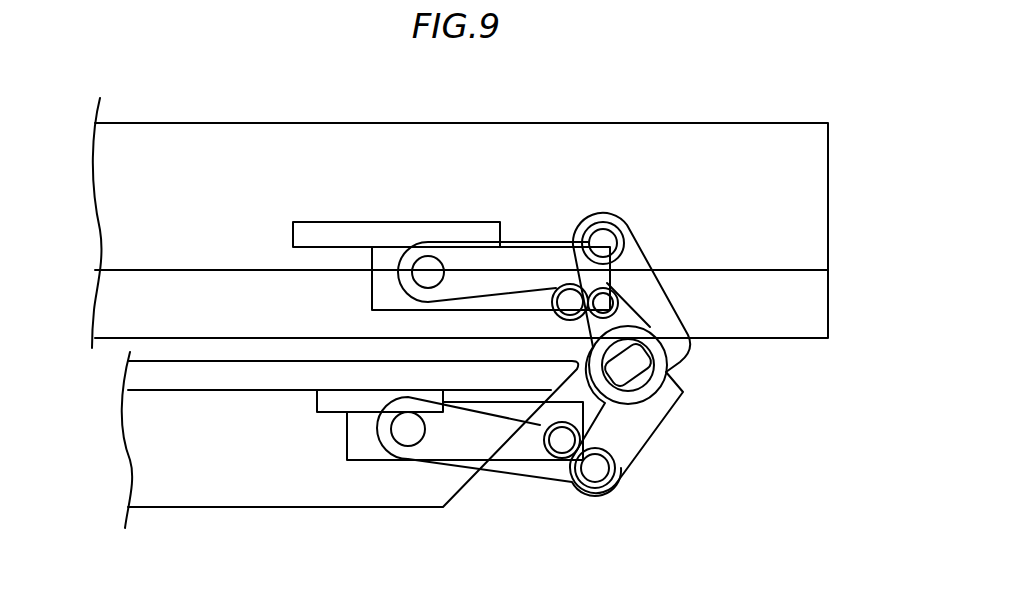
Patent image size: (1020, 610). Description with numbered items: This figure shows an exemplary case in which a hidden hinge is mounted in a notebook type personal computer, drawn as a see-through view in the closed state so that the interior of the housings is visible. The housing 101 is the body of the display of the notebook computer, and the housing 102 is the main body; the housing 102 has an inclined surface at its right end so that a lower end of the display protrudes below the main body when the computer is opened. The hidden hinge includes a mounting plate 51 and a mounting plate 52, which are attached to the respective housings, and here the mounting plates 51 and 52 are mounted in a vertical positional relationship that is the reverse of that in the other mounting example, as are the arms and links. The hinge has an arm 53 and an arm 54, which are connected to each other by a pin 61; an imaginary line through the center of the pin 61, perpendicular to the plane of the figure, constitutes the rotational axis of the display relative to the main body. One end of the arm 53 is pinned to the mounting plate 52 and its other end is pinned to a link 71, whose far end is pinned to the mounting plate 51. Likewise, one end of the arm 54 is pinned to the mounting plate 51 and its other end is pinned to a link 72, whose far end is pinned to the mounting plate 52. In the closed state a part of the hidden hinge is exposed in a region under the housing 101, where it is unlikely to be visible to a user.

The housing 101 is at (185, 122).
The housing 102 is at (192, 508).
The mounting plate 51 is at (368, 462).
The mounting plate 52 is at (372, 290).
The arm 53 is at (642, 438).
The arm 54 is at (520, 480).
The pin 61 is at (636, 373).
The link 71 is at (618, 478).
The link 72 is at (603, 213).